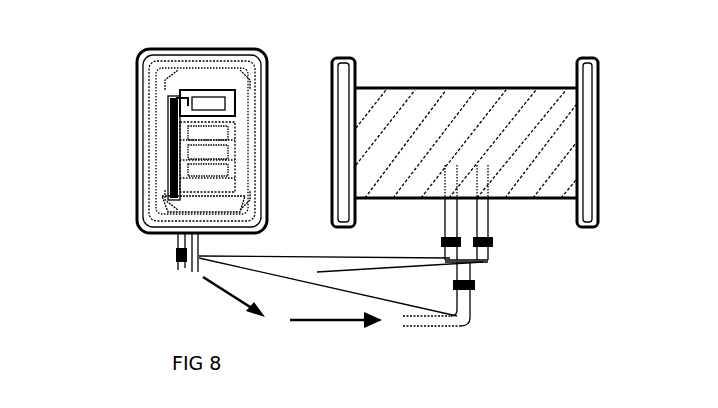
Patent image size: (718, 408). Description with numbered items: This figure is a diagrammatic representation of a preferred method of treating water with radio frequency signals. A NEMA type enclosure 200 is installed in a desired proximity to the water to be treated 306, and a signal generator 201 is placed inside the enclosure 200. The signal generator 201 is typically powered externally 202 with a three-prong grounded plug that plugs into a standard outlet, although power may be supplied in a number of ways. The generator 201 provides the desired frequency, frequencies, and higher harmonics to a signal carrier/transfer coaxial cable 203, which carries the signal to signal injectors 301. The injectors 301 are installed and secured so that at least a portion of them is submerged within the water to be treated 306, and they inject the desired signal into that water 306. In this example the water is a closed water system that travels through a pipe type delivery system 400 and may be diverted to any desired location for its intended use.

The NEMA type enclosure 200 is at (137, 82).
The signal generator 201 is at (197, 123).
The external power 202 is at (177, 256).
The signal carrier/transfer coaxial cable 203 is at (316, 274).
The signal injectors 301 is at (483, 217).
The water to be treated 306 is at (517, 105).
The pipe type delivery system 400 is at (598, 147).